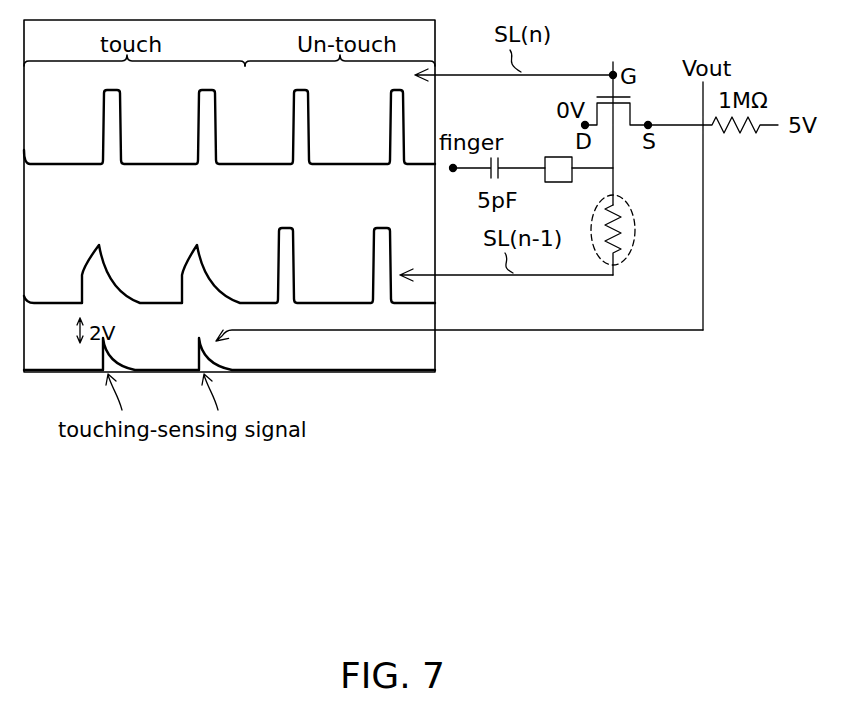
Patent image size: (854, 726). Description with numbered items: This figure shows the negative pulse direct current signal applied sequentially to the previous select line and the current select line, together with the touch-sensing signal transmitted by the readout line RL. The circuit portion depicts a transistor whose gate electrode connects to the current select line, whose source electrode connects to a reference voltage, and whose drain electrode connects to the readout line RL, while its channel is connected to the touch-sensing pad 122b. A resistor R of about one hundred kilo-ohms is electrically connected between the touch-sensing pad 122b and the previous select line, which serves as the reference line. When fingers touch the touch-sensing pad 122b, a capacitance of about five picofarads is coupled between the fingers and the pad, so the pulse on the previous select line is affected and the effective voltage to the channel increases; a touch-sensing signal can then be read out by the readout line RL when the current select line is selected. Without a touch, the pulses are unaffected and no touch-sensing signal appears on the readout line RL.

The touch-sensing pad 122b is at (545, 165).
The resistor R is at (628, 250).
The readout line RL is at (594, 333).